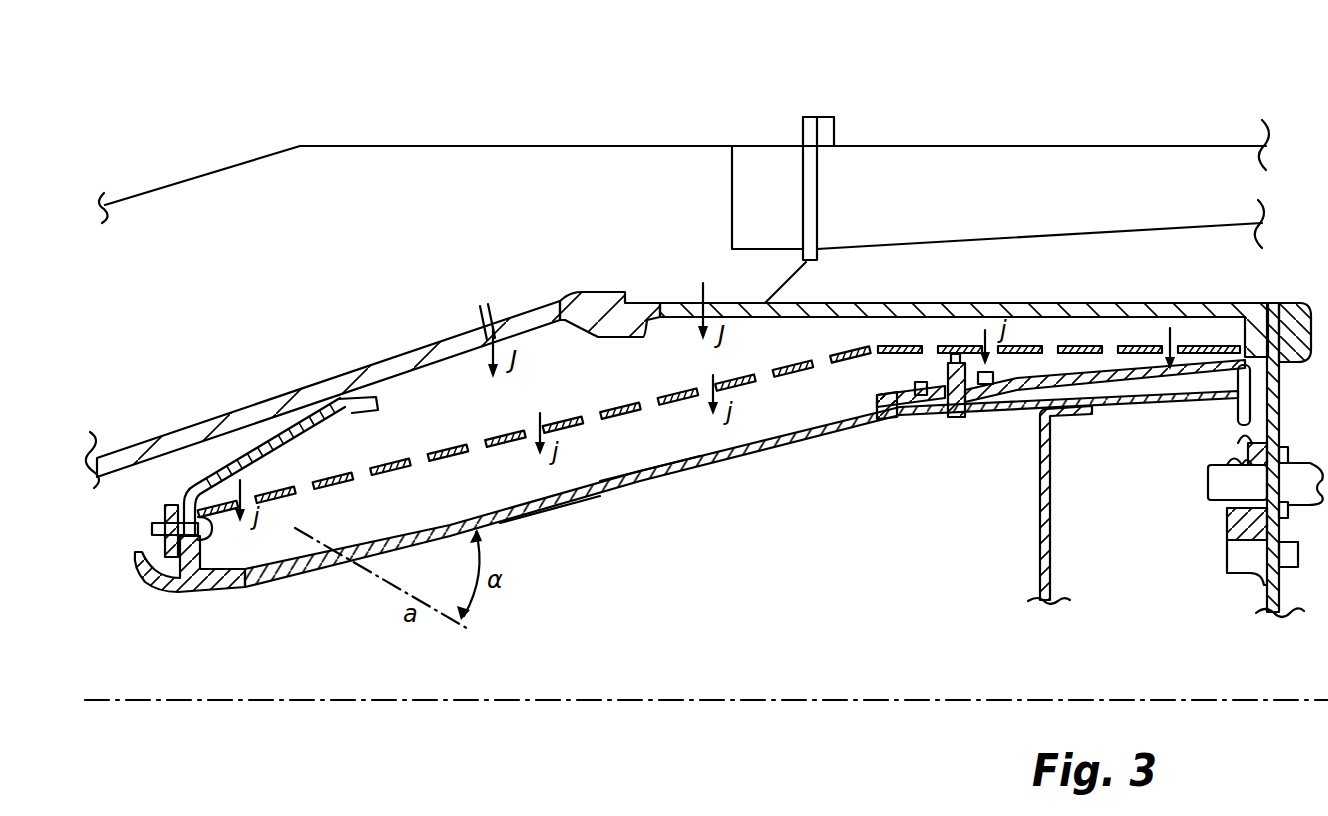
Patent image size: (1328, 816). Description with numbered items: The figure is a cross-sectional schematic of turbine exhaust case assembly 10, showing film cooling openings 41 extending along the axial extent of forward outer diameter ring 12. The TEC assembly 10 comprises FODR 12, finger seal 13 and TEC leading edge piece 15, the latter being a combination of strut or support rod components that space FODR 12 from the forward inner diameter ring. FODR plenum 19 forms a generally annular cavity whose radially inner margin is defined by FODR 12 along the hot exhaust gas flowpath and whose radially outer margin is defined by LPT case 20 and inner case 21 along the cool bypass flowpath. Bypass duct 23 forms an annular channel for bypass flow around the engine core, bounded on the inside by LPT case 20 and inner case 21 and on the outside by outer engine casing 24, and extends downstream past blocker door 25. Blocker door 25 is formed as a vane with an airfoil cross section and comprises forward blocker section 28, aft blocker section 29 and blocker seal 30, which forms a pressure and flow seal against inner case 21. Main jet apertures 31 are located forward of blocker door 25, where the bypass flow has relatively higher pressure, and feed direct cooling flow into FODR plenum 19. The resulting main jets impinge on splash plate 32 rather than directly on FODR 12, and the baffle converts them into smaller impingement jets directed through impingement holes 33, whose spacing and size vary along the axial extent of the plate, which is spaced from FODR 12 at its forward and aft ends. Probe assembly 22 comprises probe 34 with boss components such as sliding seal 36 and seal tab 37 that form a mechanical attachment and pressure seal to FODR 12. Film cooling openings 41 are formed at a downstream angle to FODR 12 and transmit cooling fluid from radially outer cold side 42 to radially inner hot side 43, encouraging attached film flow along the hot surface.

The TEC assembly 10 is at (100, 362).
The forward outer diameter ring 12 is at (678, 464).
The finger seal 13 is at (242, 455).
The TEC leading edge piece 15 is at (1038, 568).
The forward outer diameter ring plenum 19 is at (570, 390).
The LPT case 20 is at (402, 355).
The inner case 21 is at (642, 292).
The probe assembly 22 is at (960, 432).
The bypass duct 23 is at (340, 198).
The outer engine casing 24 is at (1030, 145).
The blocker door 25 is at (814, 92).
The forward blocker section 28 is at (760, 153).
The aft blocker section 29 is at (837, 155).
The blocker seal 30 is at (782, 292).
The main jet apertures 31 is at (487, 322).
The splash plate 32 is at (614, 408).
The impingement holes 33 is at (417, 466).
The probe 34 is at (955, 362).
The sliding seal 36 is at (932, 393).
The seal tab 37 is at (1023, 393).
The film cooling openings 41 is at (843, 432).
The radially outer side 42 is at (693, 473).
The radially inner side 43 is at (583, 505).